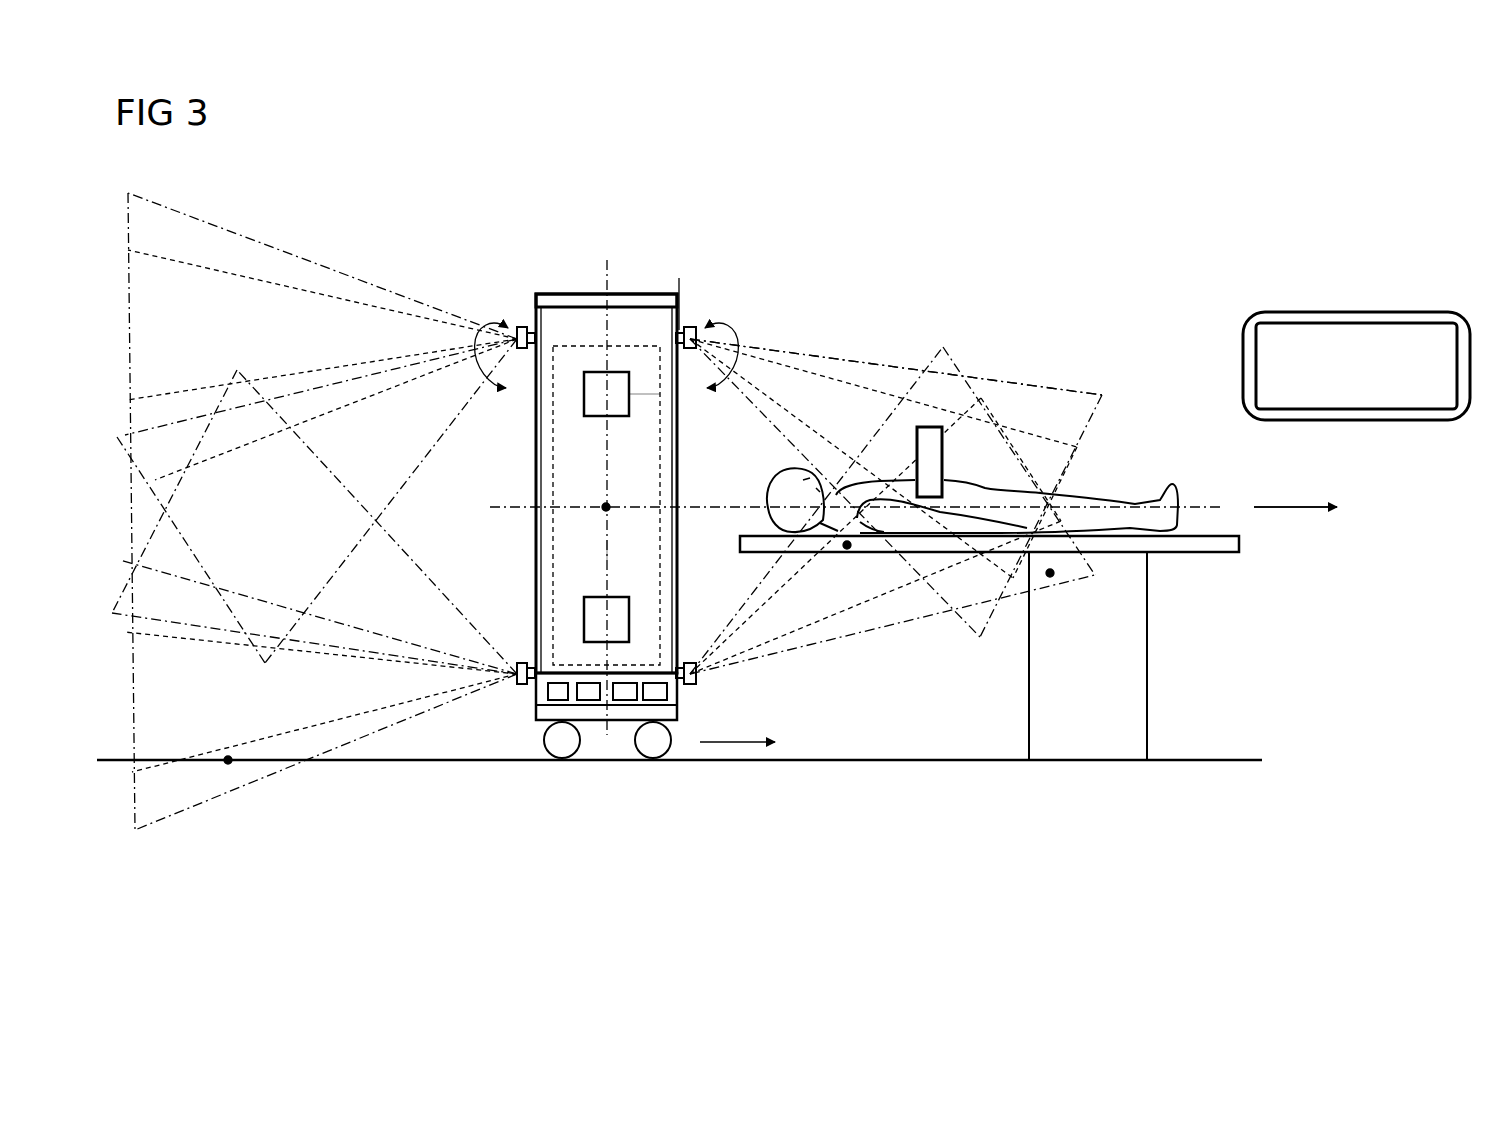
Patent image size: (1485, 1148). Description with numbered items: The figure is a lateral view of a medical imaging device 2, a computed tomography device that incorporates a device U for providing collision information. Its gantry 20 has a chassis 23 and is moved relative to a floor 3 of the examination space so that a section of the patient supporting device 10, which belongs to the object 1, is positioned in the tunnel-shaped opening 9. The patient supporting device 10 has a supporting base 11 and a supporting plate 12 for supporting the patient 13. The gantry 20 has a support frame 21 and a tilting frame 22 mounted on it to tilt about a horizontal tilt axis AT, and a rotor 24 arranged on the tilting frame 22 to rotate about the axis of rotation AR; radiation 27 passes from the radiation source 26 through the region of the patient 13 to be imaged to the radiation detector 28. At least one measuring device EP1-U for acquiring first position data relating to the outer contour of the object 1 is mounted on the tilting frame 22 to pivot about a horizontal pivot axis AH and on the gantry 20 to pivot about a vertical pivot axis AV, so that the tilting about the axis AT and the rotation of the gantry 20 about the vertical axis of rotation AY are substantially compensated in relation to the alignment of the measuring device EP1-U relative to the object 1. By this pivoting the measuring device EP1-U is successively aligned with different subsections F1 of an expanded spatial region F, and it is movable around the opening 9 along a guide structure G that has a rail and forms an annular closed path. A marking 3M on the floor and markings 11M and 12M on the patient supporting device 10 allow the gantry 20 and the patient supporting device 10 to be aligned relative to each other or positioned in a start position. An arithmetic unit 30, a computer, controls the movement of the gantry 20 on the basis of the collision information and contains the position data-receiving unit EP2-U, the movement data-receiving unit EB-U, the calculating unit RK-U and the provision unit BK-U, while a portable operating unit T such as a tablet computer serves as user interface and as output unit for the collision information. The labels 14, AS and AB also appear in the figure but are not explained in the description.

The object 1 is at (1052, 648).
The patient supporting device 10 is at (1052, 648).
The medical imaging device 2 is at (586, 539).
The gantry 20 is at (586, 539).
The support frame 21 is at (590, 300).
The tilting frame 22 is at (551, 315).
The chassis 23 is at (540, 710).
The rotor 24 is at (583, 405).
The radiation source 26 is at (630, 400).
The radiation 27 is at (602, 548).
The radiation detector 28 is at (632, 622).
The arithmetic unit 30 is at (543, 687).
The opening 9 is at (562, 450).
The floor 3 is at (948, 763).
The marking 3M is at (228, 765).
The supporting base 11 is at (1149, 691).
The marking 11M is at (1050, 578).
The supporting plate 12 is at (1206, 554).
The marking 12M is at (848, 550).
The patient 13 is at (1137, 506).
The object / marker on patient 14 is at (945, 458).
The portable operating unit T is at (1305, 338).
The expanded spatial region F is at (291, 255).
The subsection F1 is at (850, 366).
The device for providing collision information U is at (451, 841).
The guide structure G is at (680, 478).
The horizontal pivot axis AH is at (682, 358).
The vertical axis of rotation AY is at (609, 270).
The vertical pivot axis AV is at (683, 283).
The horizontal tilt axis AT is at (530, 493).
The system axis AS is at (603, 507).
The axis of rotation AR is at (1203, 505).
The movement direction AB is at (1298, 513).
The measuring device EP1-U is at (523, 325).
The position data-receiving unit EP2-U is at (557, 695).
The movement data-receiving unit EB-U is at (590, 695).
The calculating unit RK-U is at (625, 695).
The provision unit BK-U is at (662, 695).